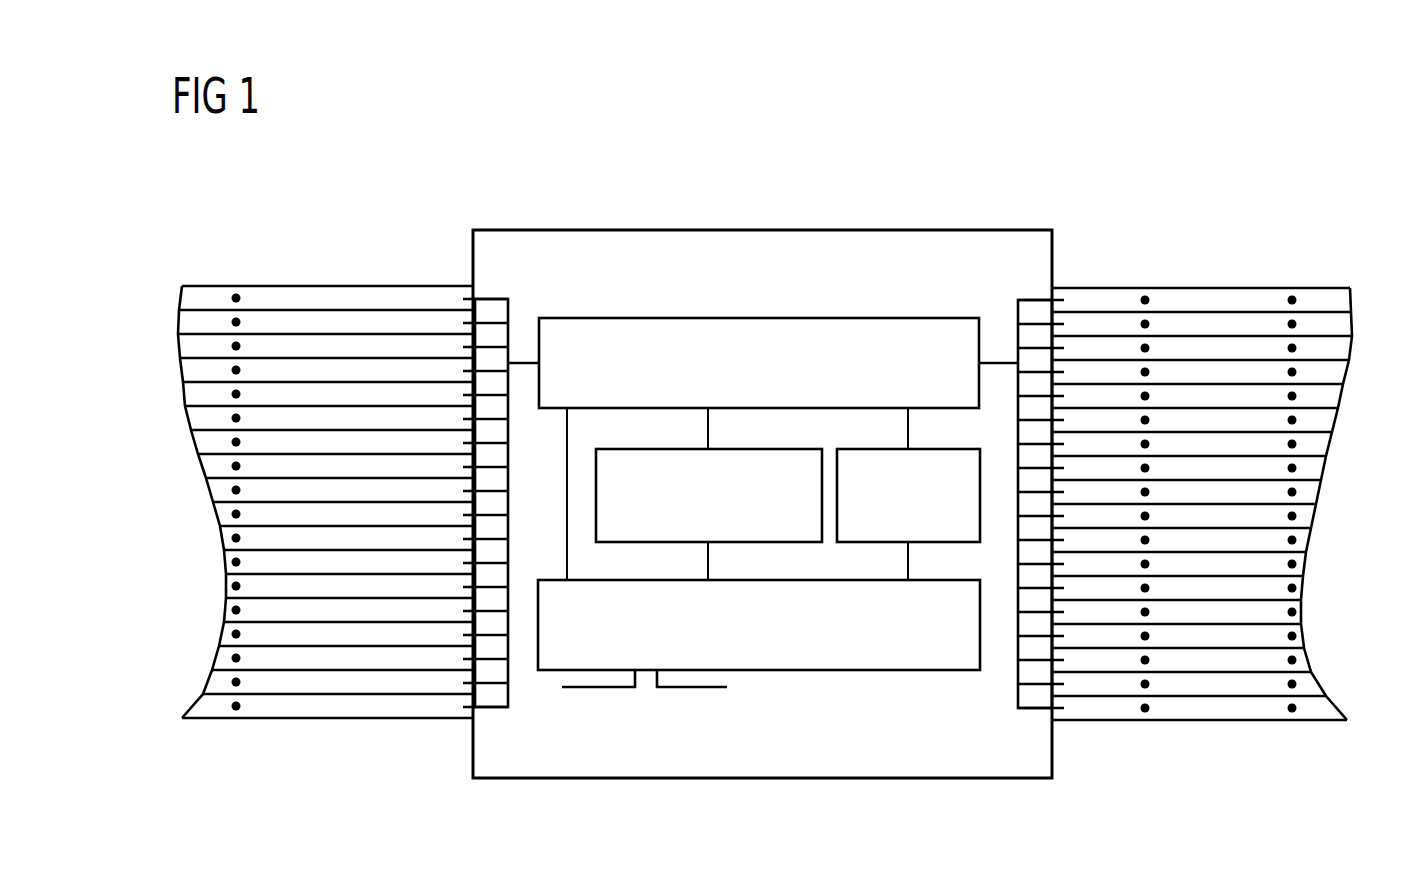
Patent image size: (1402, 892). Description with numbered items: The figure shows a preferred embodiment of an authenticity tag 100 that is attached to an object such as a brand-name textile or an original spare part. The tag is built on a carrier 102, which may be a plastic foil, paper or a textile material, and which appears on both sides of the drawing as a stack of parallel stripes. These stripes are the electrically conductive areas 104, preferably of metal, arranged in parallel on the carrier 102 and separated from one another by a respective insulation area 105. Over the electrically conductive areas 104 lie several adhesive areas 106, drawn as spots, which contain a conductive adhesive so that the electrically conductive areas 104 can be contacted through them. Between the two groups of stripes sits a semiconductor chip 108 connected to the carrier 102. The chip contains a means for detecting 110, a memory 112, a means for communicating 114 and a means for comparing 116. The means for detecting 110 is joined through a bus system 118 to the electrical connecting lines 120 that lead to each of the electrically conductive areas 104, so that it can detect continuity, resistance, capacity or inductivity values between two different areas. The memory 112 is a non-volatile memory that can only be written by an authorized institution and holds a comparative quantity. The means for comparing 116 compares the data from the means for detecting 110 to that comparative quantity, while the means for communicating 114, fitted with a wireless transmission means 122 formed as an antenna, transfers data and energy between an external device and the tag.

The authenticity tag 100 is at (920, 797).
The carrier 102 is at (333, 253).
The electrically conductive areas 104 is at (291, 316).
The insulation area 105 is at (1090, 312).
The adhesive area 106 is at (236, 322).
The semiconductor chip 108 is at (812, 208).
The means for detecting 110 is at (648, 318).
The memory 112 is at (980, 543).
The means for communicating 114 is at (800, 672).
The means for comparing 116 is at (596, 520).
The bus system 118 is at (527, 362).
The electrical connecting lines 120 is at (488, 300).
The wireless transmission means 122 is at (644, 695).